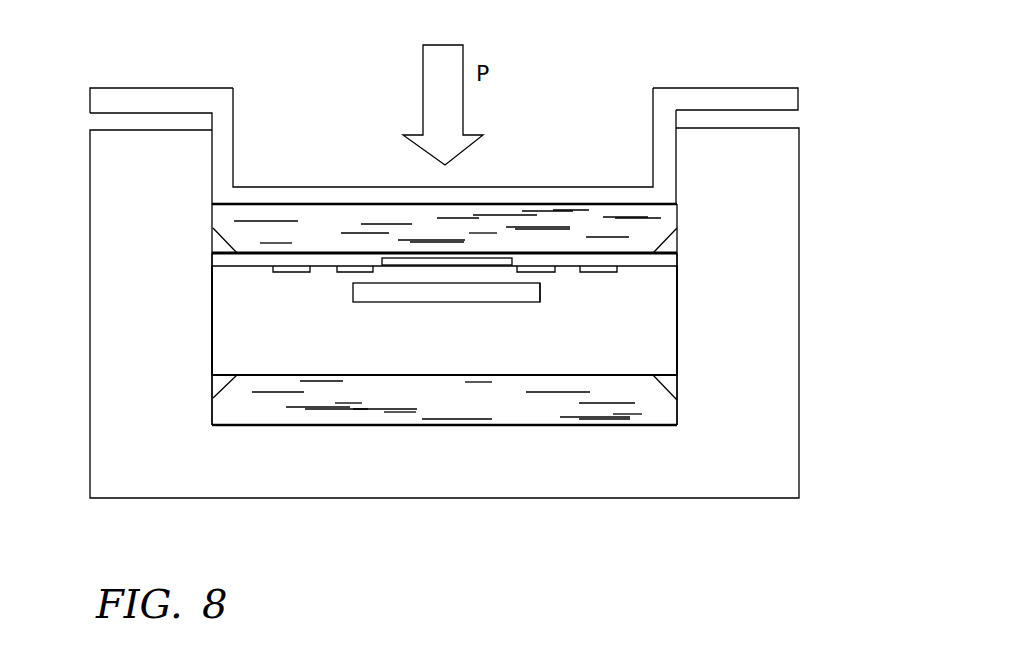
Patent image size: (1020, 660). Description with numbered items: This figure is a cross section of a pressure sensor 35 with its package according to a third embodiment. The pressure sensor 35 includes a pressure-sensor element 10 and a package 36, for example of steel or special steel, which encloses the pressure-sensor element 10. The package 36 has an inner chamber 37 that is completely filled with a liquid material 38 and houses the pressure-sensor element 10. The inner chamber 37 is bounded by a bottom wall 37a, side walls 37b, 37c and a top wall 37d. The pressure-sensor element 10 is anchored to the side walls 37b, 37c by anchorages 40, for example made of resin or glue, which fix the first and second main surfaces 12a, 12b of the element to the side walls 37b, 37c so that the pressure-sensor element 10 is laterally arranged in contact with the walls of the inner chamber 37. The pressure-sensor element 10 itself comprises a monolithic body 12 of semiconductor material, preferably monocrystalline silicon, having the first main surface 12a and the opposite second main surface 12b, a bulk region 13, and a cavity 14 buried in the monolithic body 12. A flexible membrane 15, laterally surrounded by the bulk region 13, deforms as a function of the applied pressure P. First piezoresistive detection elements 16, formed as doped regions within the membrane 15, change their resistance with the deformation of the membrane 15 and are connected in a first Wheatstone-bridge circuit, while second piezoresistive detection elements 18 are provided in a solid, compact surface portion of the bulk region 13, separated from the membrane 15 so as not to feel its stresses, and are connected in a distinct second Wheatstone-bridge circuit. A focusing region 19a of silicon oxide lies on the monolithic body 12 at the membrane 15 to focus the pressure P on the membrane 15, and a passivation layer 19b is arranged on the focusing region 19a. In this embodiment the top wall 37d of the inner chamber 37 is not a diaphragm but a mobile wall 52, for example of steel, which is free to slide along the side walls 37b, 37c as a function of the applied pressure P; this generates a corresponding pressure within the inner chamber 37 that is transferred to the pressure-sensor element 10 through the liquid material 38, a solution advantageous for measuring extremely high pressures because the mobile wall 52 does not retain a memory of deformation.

The pressure-sensor element 10 is at (683, 297).
The monolithic body 12 is at (664, 362).
The first main surface 12a is at (256, 250).
The second main surface 12b is at (300, 419).
The bulk region 13 is at (596, 364).
The cavity 14 is at (531, 291).
The membrane 15 is at (432, 276).
The first piezoresistive detection elements 16 is at (347, 274).
The second piezoresistive detection elements 18 is at (298, 275).
The focusing region 19a is at (497, 264).
The passivation layer 19b is at (681, 252).
The pressure sensor 35 is at (850, 127).
The package 36 is at (808, 437).
The inner chamber 37 is at (270, 381).
The bottom wall 37a is at (478, 428).
The side wall 37b is at (211, 297).
The side wall 37c is at (683, 333).
The top wall 37d is at (516, 203).
The liquid material 38 is at (426, 236).
The anchorages 40 is at (222, 247).
The mobile wall 52 is at (280, 203).